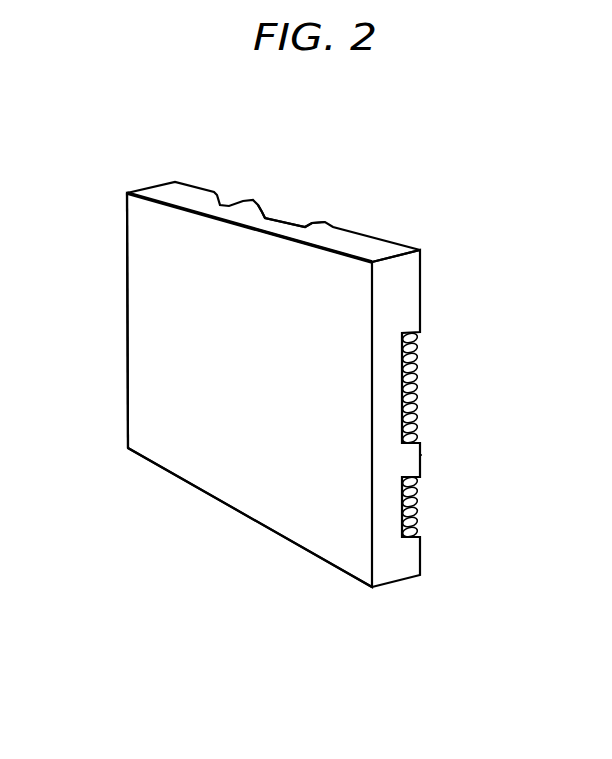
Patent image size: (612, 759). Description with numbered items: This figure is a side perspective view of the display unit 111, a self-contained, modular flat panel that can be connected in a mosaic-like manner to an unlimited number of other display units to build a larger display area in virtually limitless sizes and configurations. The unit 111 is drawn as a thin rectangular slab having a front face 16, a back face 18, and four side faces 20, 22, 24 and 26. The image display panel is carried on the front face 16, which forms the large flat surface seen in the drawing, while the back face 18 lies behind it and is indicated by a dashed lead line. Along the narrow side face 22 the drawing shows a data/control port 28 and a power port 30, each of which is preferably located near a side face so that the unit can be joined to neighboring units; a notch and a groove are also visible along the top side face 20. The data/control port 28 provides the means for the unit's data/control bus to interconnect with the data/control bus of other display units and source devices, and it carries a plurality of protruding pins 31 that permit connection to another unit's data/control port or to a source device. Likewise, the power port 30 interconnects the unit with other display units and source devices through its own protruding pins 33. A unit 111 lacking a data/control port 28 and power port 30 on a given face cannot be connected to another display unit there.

The display unit 111 is at (99, 155).
The front face 16 is at (170, 387).
The back face 18 is at (422, 454).
The side face 20 is at (257, 200).
The side face 22 is at (397, 292).
The side face 24 is at (228, 505).
The side face 26 is at (125, 312).
The data/control port 28 is at (285, 219).
The power port 30 is at (418, 527).
The pins 31 is at (420, 355).
The pins 33 is at (418, 482).